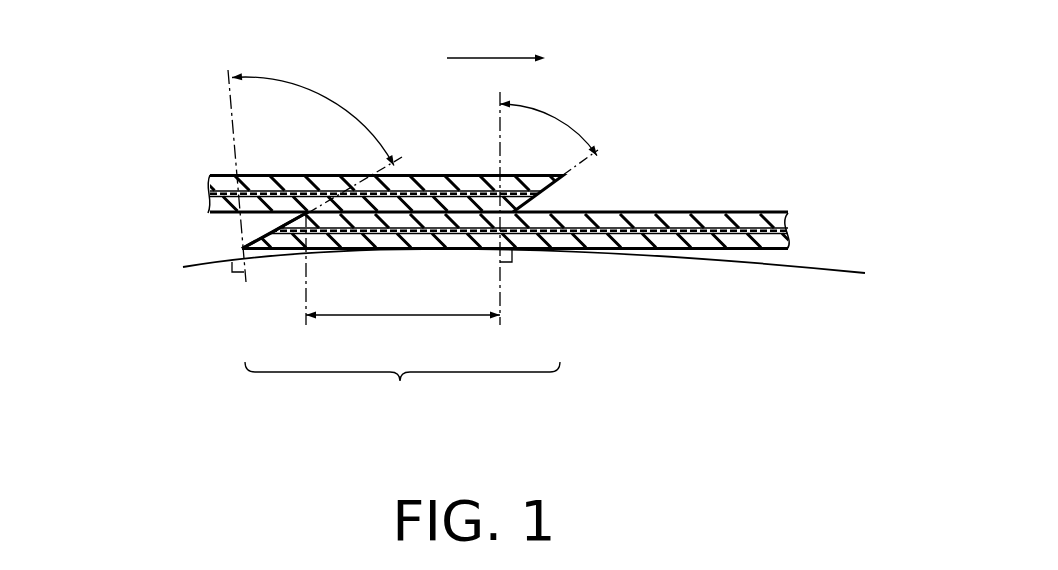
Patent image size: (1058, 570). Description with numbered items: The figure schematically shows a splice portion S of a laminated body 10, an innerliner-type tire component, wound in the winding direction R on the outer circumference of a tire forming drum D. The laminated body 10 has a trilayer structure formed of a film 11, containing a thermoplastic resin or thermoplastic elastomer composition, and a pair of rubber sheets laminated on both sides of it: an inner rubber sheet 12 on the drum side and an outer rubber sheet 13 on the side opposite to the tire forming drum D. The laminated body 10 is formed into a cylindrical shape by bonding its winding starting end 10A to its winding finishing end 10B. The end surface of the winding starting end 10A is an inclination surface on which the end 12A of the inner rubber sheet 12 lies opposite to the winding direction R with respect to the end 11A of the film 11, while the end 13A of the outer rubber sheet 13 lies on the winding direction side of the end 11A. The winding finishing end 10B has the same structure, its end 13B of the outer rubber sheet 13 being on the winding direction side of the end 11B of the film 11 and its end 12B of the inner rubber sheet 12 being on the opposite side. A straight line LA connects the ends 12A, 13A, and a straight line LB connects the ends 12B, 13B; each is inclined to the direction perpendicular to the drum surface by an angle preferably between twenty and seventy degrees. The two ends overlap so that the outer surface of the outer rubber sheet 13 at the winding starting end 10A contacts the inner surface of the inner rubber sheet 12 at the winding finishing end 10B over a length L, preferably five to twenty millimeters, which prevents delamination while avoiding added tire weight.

The laminated body 10 is at (733, 132).
The winding starting end 10A is at (289, 254).
The winding finishing end 10B is at (485, 172).
The film 11 is at (756, 230).
The end of the film at the winding starting end 11A is at (272, 230).
The end of the film at the winding finishing end 11B is at (531, 194).
The inner rubber sheet 12 is at (728, 222).
The end of the inner rubber sheet at the winding starting end 12A is at (244, 260).
The end of the inner rubber sheet at the winding finishing end 12B is at (520, 208).
The outer rubber sheet 13 is at (780, 218).
The end of the outer rubber sheet at the winding starting end 13A is at (305, 213).
The end of the outer rubber sheet at the winding finishing end 13B is at (547, 178).
The tire forming drum D is at (800, 268).
The length of the overlapping portion L is at (403, 222).
The splice portion S is at (402, 392).
The winding direction R is at (496, 47).
The straight line connecting ends at the winding starting end LA is at (368, 180).
The straight line connecting ends at the winding finishing end LB is at (593, 157).